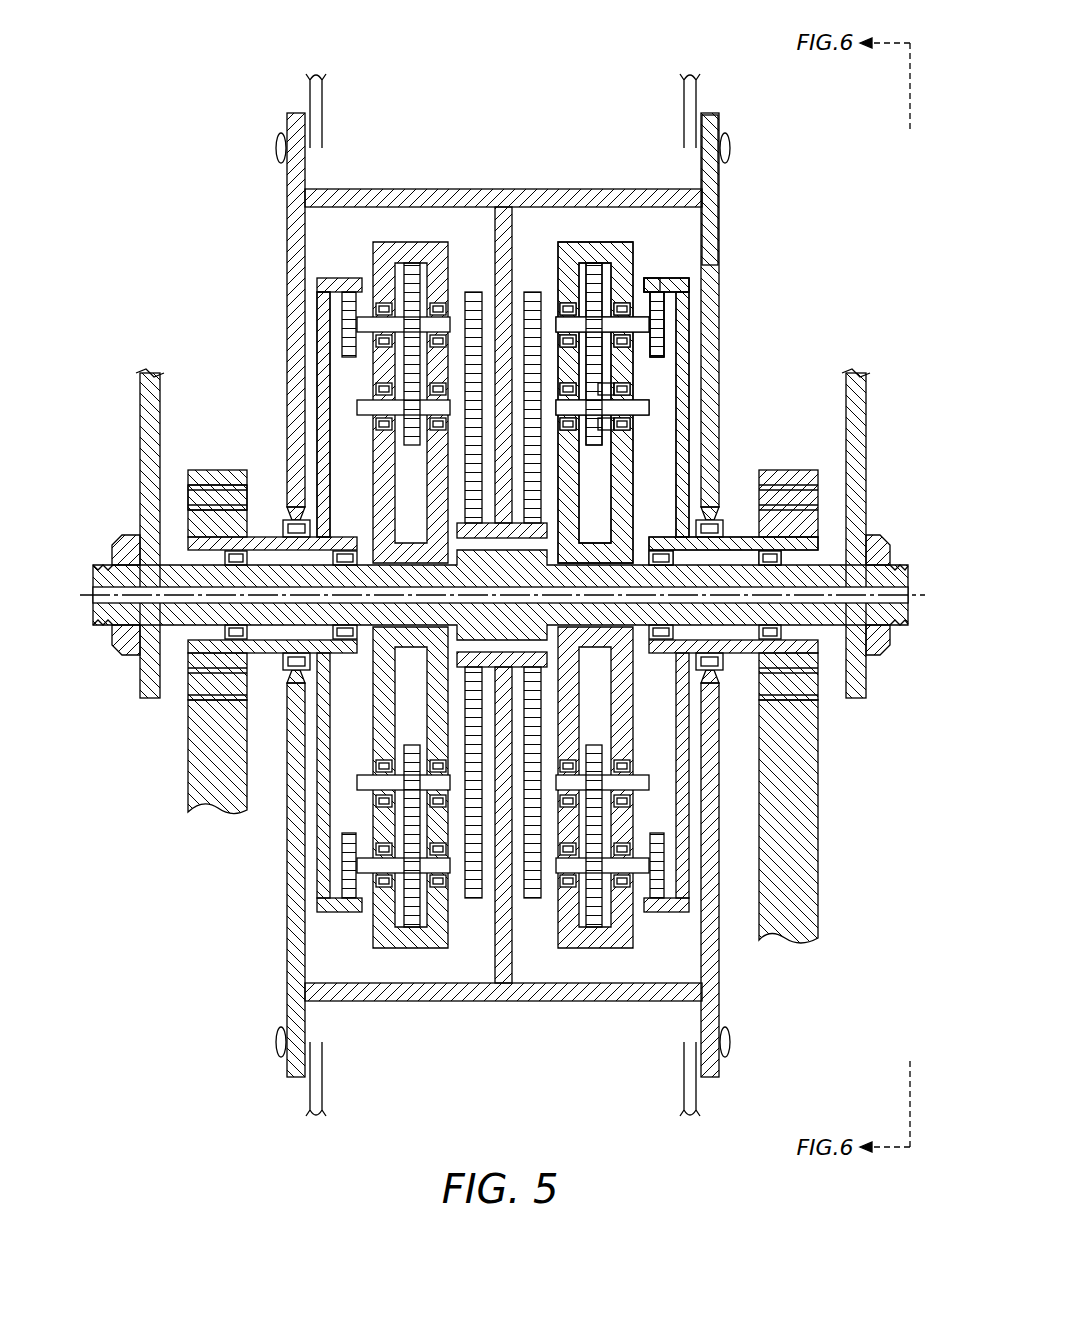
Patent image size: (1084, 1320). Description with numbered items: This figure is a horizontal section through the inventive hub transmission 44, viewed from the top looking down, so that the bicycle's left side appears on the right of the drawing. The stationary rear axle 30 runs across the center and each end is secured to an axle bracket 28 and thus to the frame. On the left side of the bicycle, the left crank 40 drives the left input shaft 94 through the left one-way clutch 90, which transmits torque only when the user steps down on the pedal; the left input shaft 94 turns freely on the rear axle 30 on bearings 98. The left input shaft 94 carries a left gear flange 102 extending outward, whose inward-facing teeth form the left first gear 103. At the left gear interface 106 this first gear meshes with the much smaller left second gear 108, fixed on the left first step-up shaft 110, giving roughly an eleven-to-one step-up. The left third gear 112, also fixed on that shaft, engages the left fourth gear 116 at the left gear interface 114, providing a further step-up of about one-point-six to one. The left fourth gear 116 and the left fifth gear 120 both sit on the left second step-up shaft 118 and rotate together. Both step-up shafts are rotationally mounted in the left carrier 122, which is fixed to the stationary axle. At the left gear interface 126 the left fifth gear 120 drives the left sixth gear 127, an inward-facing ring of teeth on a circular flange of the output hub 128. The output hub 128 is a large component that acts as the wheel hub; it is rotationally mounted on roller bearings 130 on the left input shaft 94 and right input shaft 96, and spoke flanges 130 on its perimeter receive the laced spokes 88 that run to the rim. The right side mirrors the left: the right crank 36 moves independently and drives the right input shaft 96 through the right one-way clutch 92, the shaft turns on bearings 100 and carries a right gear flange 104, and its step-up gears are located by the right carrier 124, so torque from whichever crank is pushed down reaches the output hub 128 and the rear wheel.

The axle bracket 28 is at (140, 482).
The rear axle 30 is at (905, 612).
The right crank 36 is at (190, 770).
The left crank 40 is at (818, 870).
The hub transmission 44 is at (118, 320).
The laced spokes 88 is at (323, 98).
The left one-way clutch 90 is at (800, 690).
The right one-way clutch 92 is at (198, 690).
The left input shaft 94 is at (730, 540).
The right input shaft 96 is at (266, 538).
The bearings 98 is at (772, 553).
The bearings 100 is at (230, 553).
The left gear flange 102 is at (684, 300).
The left first gear 103 is at (672, 292).
The right gear flange 104 is at (338, 278).
The left gear interface 106 is at (668, 282).
The left second gear 108 is at (658, 320).
The left first step-up shaft 110 is at (712, 240).
The left third gear 112 is at (595, 263).
The left gear interface 114 is at (612, 372).
The left fourth gear 116 is at (606, 392).
The left second step-up shaft 118 is at (504, 215).
The left fifth gear 120 is at (473, 292).
The left carrier 122 is at (612, 252).
The right carrier 124 is at (400, 242).
The left gear interface 126 is at (412, 263).
The left sixth gear 127 is at (468, 523).
The output hub 128 is at (290, 196).
The roller bearings / spoke flanges 130 is at (287, 120).